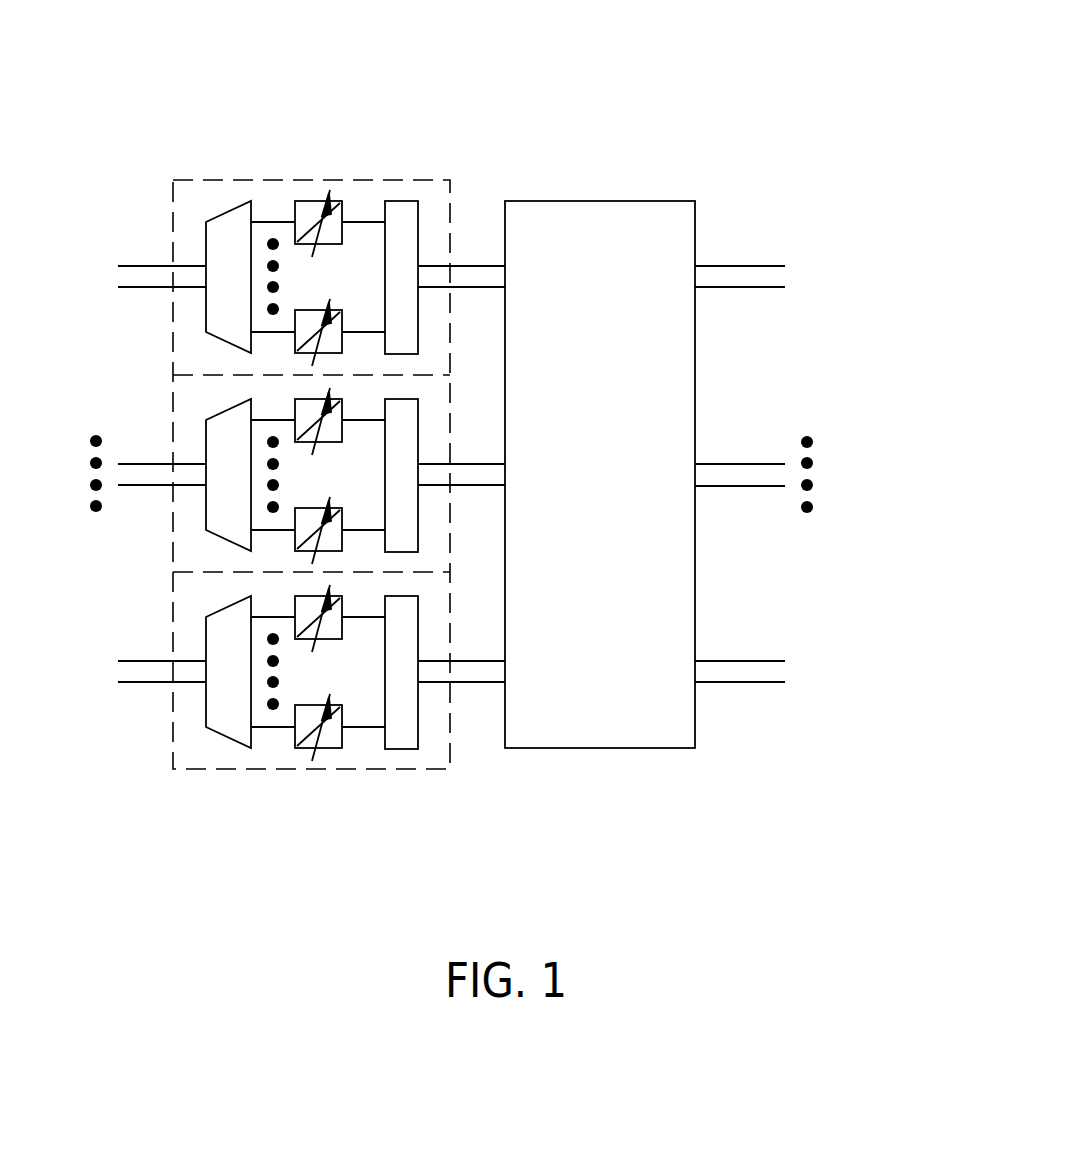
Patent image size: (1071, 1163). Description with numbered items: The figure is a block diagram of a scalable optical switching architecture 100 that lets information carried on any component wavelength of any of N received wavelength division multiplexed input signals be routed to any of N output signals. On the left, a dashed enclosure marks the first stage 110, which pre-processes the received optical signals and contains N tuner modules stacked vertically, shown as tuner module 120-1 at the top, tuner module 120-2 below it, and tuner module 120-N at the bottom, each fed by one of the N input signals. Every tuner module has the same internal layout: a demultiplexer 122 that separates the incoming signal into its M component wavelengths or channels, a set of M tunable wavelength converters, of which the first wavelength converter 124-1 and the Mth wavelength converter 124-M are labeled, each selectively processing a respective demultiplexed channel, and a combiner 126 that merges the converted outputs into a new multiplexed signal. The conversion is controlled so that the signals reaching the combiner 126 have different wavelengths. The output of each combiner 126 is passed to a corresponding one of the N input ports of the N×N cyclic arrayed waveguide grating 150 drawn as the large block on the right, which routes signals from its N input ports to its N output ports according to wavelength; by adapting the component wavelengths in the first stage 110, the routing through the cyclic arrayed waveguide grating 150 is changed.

The scalable optical switching architecture 100 is at (780, 37).
The first stage 110 is at (341, 131).
The tuner module 120-1 is at (217, 193).
The tuner module 120-2 is at (190, 410).
The tuner module 120-N is at (190, 613).
The demultiplexer 122 is at (185, 714).
The tunable wavelength converter 124-1 is at (190, 587).
The tunable wavelength converter 124-M is at (340, 763).
The combiner 126 is at (437, 724).
The N×N cyclic arrayed waveguide grating 150 is at (636, 201).